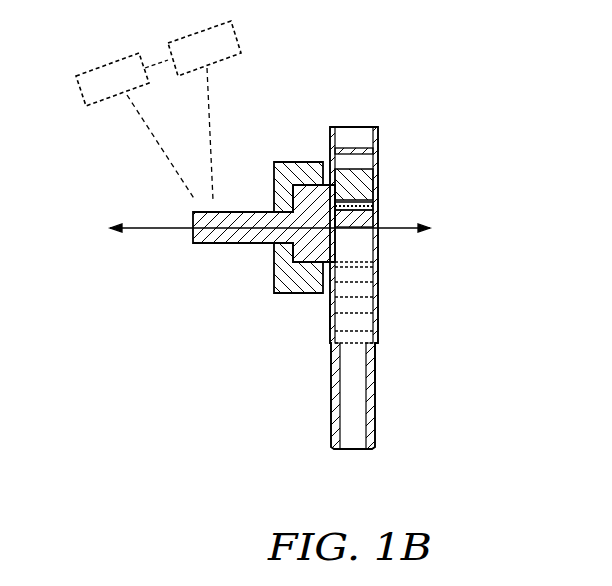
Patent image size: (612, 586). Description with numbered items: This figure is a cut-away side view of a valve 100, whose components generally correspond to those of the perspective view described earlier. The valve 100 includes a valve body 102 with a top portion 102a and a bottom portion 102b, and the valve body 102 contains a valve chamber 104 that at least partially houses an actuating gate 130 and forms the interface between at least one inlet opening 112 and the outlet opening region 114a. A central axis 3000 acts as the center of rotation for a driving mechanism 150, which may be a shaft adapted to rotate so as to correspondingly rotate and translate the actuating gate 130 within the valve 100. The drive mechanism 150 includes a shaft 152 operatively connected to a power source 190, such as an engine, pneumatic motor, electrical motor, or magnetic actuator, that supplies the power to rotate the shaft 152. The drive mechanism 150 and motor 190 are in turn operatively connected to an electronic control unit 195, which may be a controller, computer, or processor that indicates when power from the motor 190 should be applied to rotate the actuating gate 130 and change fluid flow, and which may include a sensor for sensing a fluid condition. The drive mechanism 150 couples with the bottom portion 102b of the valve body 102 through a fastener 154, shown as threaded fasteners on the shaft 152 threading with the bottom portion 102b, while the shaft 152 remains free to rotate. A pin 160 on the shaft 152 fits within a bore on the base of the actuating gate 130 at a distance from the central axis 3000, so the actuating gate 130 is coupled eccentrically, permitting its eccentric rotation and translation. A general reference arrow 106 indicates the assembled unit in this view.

The valve 100 is at (37, 525).
The valve body 102 is at (368, 127).
The top portion 102a is at (375, 350).
The bottom portion 102b is at (330, 313).
The valve chamber 104 is at (348, 127).
The drive assembly 106 is at (453, 138).
The inlet opening 112 is at (372, 443).
The handle portion 114a is at (0, 573).
The actuating gate 130 is at (373, 182).
The driving mechanism 150 is at (222, 208).
The shaft 152 is at (247, 245).
The fastener 154 is at (288, 160).
The pin 160 is at (378, 203).
The power source 190 is at (237, 33).
The electronic control unit 195 is at (81, 92).
The central axis 3000 is at (148, 230).